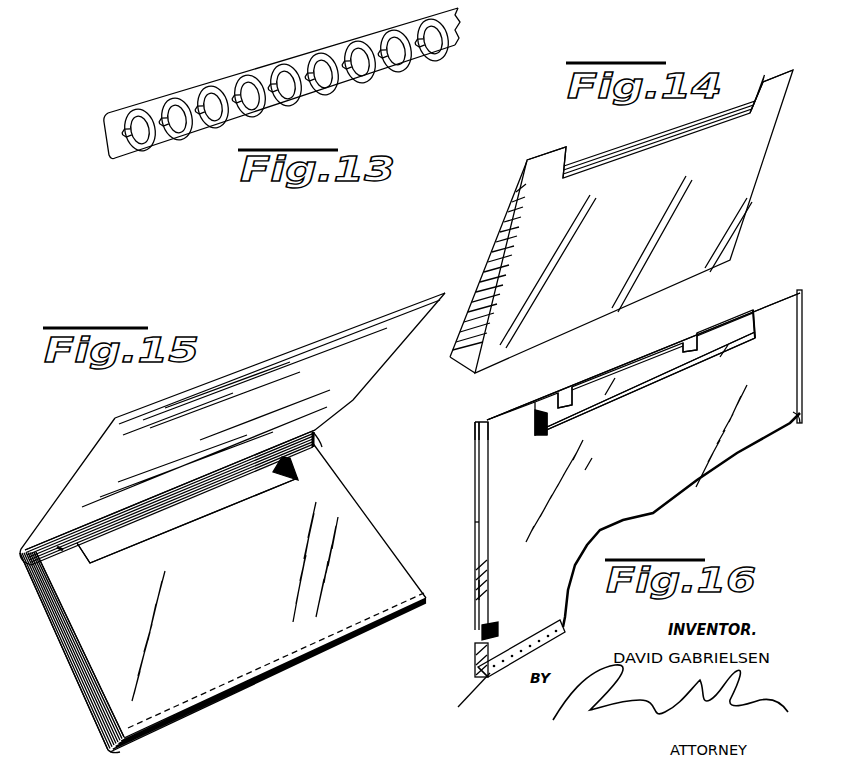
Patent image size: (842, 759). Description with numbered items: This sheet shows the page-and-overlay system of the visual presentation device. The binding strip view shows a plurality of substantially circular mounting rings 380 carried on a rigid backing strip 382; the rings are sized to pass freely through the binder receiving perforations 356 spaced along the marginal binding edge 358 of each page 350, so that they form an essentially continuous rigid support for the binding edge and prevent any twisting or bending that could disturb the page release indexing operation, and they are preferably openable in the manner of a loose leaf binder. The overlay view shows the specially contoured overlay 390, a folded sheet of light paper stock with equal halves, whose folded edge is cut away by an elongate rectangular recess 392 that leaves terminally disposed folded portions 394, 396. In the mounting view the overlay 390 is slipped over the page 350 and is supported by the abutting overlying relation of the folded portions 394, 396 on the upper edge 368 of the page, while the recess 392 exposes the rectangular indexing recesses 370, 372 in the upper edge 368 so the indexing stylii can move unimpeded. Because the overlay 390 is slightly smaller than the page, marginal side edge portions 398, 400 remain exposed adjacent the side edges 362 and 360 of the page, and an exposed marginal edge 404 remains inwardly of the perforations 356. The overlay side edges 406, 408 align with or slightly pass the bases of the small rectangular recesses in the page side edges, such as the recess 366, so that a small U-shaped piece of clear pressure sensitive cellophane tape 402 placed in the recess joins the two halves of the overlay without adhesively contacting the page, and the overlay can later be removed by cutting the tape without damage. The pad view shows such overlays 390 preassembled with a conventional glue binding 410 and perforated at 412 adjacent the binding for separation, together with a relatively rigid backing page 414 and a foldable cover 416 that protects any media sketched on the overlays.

In FIG. 13, the mounting rings 380 is at (405, 72).
In FIG. 13, the backing strip 382 is at (272, 38).
In FIG. 14, the overlay 390 is at (538, 227).
In FIG. 15, the overlay 390 is at (100, 627).
In FIG. 16, the overlay 390 is at (677, 473).
In FIG. 14, the rectangular recess 392 is at (693, 117).
In FIG. 15, the rectangular recess 392 is at (185, 523).
In FIG. 16, the rectangular recess 392 is at (672, 362).
In FIG. 14, the folded portion 394 is at (545, 153).
In FIG. 15, the folded portion 394 is at (63, 550).
In FIG. 16, the folded portion 394 is at (508, 407).
In FIG. 14, the folded portion 396 is at (778, 70).
In FIG. 15, the folded portion 396 is at (320, 445).
In FIG. 16, the folded portion 396 is at (753, 305).
In FIG. 16, the page 350 is at (637, 367).
In FIG. 16, the indexing recess 370 is at (565, 398).
In FIG. 16, the indexing recess 372 is at (693, 337).
In FIG. 16, the exposed marginal side edge portion 400 is at (800, 313).
In FIG. 16, the side edge 360 is at (800, 290).
In FIG. 16, the side edge 408 is at (793, 412).
In FIG. 16, the upper edge 368 is at (480, 423).
In FIG. 16, the side edge 362 is at (475, 507).
In FIG. 16, the exposed marginal side edge portion 398 is at (478, 522).
In FIG. 16, the side edge 406 is at (488, 592).
In FIG. 16, the cellophane tape 402 is at (488, 623).
In FIG. 16, the rectangular recess 366 is at (475, 637).
In FIG. 16, the exposed marginal edge 404 is at (563, 630).
In FIG. 16, the marginal binding edge 358 is at (507, 677).
In FIG. 16, the binder receiving perforations 356 is at (468, 705).
In FIG. 15, the foldable cover 416 is at (73, 477).
In FIG. 15, the backing page 414 is at (75, 678).
In FIG. 15, the glue binding 410 is at (288, 670).
In FIG. 15, the perforations 412 is at (240, 677).